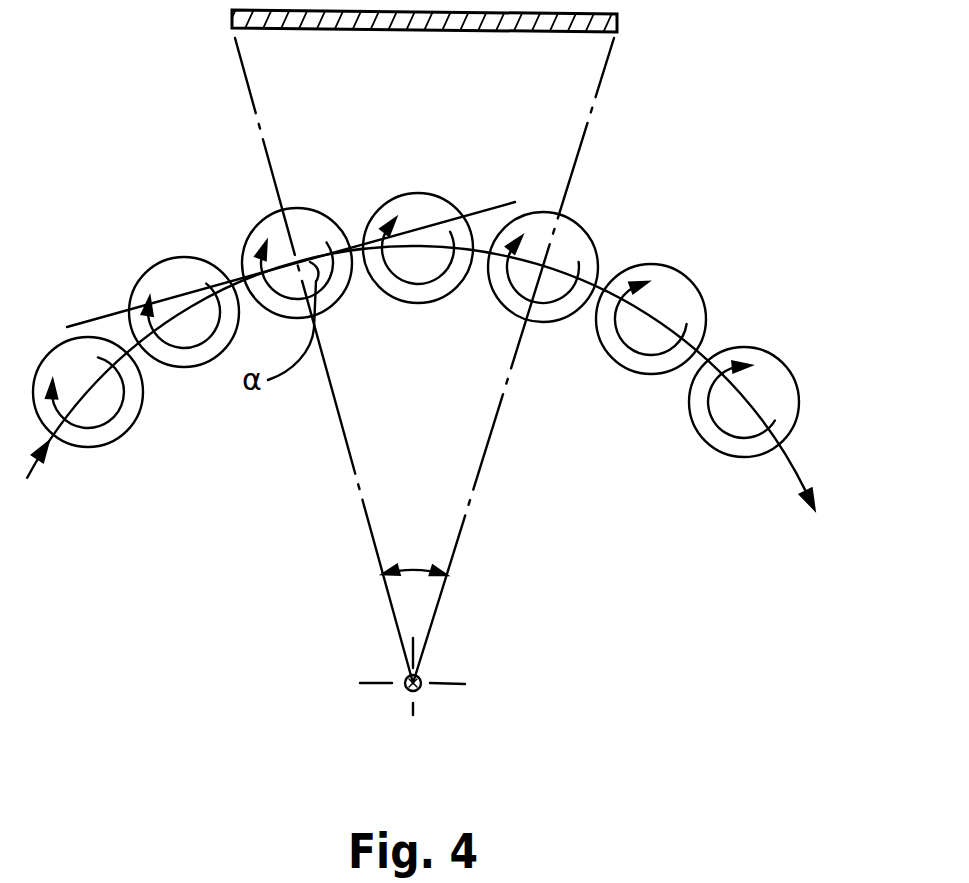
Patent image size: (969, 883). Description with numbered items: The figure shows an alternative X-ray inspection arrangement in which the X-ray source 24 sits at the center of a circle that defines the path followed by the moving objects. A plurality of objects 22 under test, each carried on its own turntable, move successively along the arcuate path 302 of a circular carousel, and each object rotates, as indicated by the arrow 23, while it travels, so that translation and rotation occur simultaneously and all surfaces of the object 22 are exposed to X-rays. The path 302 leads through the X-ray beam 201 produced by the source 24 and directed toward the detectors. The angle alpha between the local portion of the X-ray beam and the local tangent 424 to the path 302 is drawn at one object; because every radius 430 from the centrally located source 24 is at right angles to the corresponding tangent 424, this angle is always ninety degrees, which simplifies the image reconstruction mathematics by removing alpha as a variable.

The object under test 22 is at (90, 448).
The rotation arrow 23 is at (121, 414).
The X-ray source 24 is at (421, 689).
The X-ray beam 201 is at (493, 433).
The arcuate path 302 is at (606, 282).
The local tangent 424 is at (109, 312).
The radius 430 is at (350, 480).